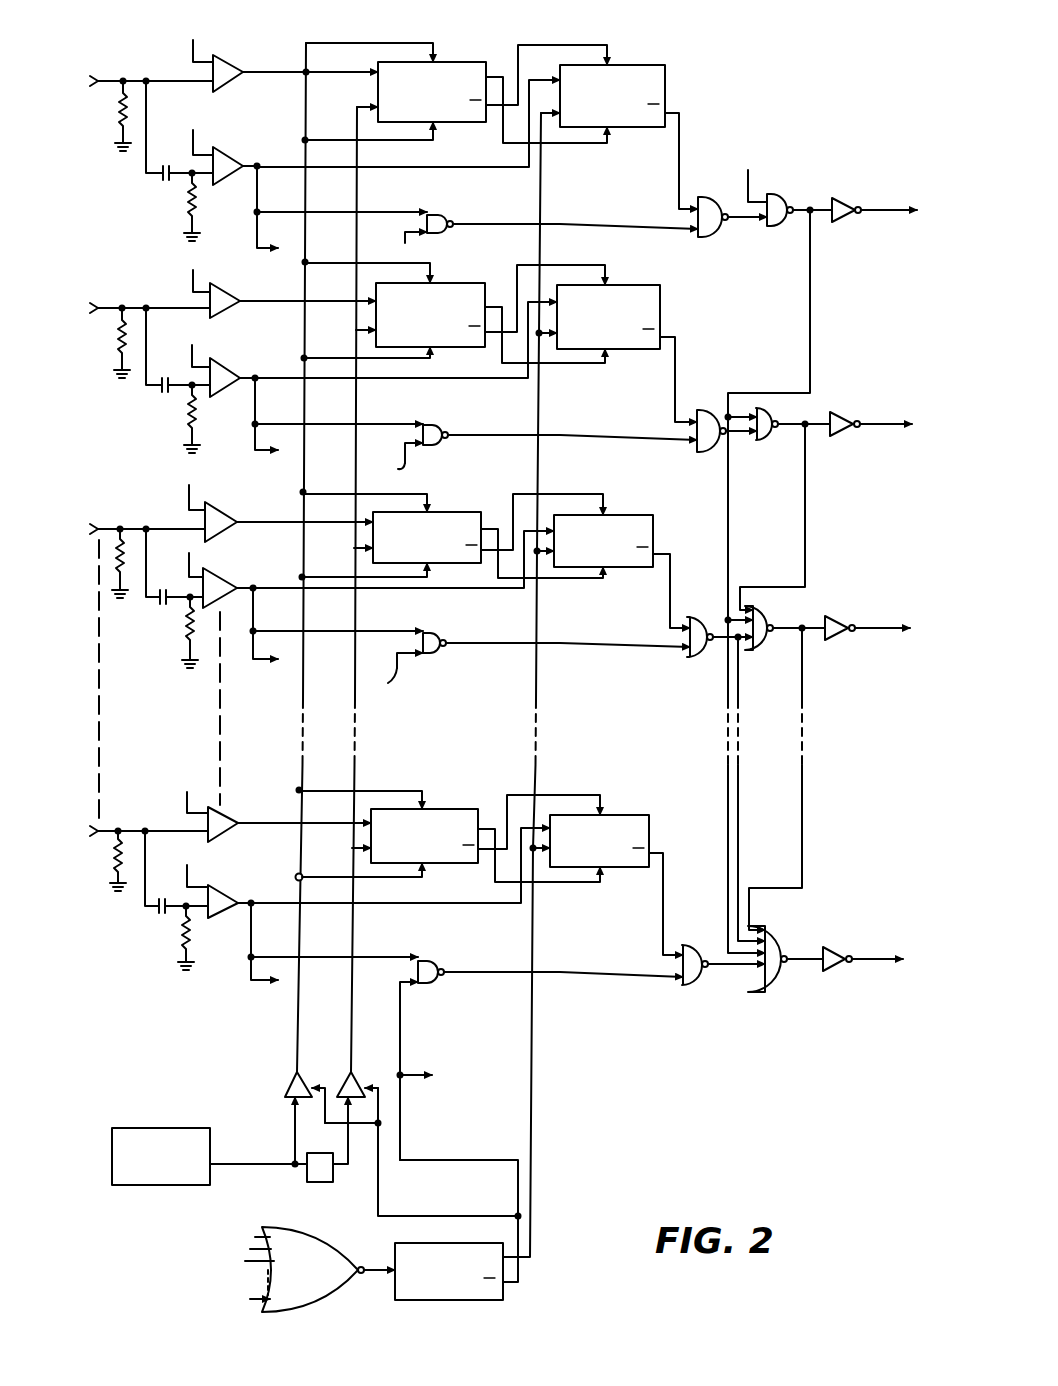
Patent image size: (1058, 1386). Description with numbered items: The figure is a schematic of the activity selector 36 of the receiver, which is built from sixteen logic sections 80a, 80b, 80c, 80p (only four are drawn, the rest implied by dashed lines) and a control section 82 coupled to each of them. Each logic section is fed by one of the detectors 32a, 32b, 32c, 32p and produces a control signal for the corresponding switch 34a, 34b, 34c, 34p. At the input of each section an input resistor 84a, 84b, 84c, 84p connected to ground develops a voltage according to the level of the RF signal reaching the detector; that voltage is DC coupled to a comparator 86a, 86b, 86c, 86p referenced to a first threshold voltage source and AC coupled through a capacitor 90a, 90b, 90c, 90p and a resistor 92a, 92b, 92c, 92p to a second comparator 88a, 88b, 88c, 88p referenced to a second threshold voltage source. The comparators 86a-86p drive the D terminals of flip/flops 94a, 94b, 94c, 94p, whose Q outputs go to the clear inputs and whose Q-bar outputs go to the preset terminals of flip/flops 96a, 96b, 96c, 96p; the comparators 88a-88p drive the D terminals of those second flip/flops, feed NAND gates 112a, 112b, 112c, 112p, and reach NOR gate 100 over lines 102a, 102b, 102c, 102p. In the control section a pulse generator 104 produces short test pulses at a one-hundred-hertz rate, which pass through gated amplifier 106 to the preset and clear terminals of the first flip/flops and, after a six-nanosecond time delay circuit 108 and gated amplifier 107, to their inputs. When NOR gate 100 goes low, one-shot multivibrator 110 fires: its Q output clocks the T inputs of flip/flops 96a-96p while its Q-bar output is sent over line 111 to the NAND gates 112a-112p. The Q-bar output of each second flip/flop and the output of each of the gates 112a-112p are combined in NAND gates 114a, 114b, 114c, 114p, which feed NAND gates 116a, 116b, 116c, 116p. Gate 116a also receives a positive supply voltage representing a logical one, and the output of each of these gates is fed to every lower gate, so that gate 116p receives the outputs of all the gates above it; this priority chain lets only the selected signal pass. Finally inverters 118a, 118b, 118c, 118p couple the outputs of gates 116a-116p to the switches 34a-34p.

The activity selector 36 is at (770, 50).
The detector 32a is at (117, 84).
The detector 32b is at (116, 310).
The detector 32c is at (116, 532).
The detector 32p is at (115, 836).
The switch 34a is at (882, 243).
The switch 34b is at (877, 458).
The switch 34c is at (875, 662).
The switch 34p is at (866, 997).
The logic section 80a is at (724, 118).
The logic section 80b is at (712, 357).
The logic section 80c is at (742, 550).
The logic section 80p is at (746, 872).
The control section 82 is at (160, 1218).
The input resistor 84a is at (118, 112).
The input resistor 84b is at (117, 323).
The input resistor 84c is at (115, 558).
The input resistor 84p is at (113, 848).
The comparator 86a is at (232, 64).
The comparator 86b is at (241, 299).
The comparator 86c is at (220, 510).
The comparator 86p is at (225, 813).
The comparator 88a is at (228, 151).
The comparator 88b is at (222, 363).
The comparator 88c is at (222, 574).
The comparator 88p is at (225, 893).
The capacitor 90a is at (162, 183).
The capacitor 90b is at (160, 389).
The capacitor 90c is at (158, 600).
The capacitor 90p is at (157, 909).
The resistor 92a is at (197, 200).
The resistor 92b is at (197, 403).
The resistor 92c is at (185, 630).
The resistor 92p is at (182, 938).
The flip/flop 94a is at (452, 58).
The flip/flop 94b is at (453, 278).
The flip/flop 94c is at (450, 510).
The flip/flop 94p is at (450, 806).
The flip/flop 96a is at (632, 66).
The flip/flop 96b is at (624, 282).
The flip/flop 96c is at (626, 513).
The flip/flop 96p is at (628, 812).
The NOR gate 100 is at (348, 1262).
The line 102a is at (256, 252).
The line 102b is at (255, 452).
The line 102c is at (258, 663).
The line 102p is at (255, 985).
The pulse generator 104 is at (176, 1128).
The gated amplifier 106 is at (283, 1081).
The gated amplifier 107 is at (360, 1077).
The time delay circuit 108 is at (333, 1180).
The one-shot multivibrator 110 is at (446, 1243).
The line 111 is at (403, 243).
The NAND gate 112a is at (446, 217).
The NAND gate 112b is at (444, 424).
The NAND gate 112c is at (442, 632).
The NAND gate 112p is at (438, 958).
The NAND gate 114a is at (709, 194).
The NAND gate 114b is at (707, 409).
The NAND gate 114c is at (699, 616).
The NAND gate 114p is at (700, 982).
The NAND gate 116a is at (781, 194).
The NAND gate 116b is at (767, 420).
The NAND gate 116c is at (766, 618).
The NAND gate 116p is at (780, 944).
The inverter 118a is at (846, 201).
The inverter 118b is at (840, 414).
The inverter 118c is at (836, 616).
The inverter 118p is at (841, 953).